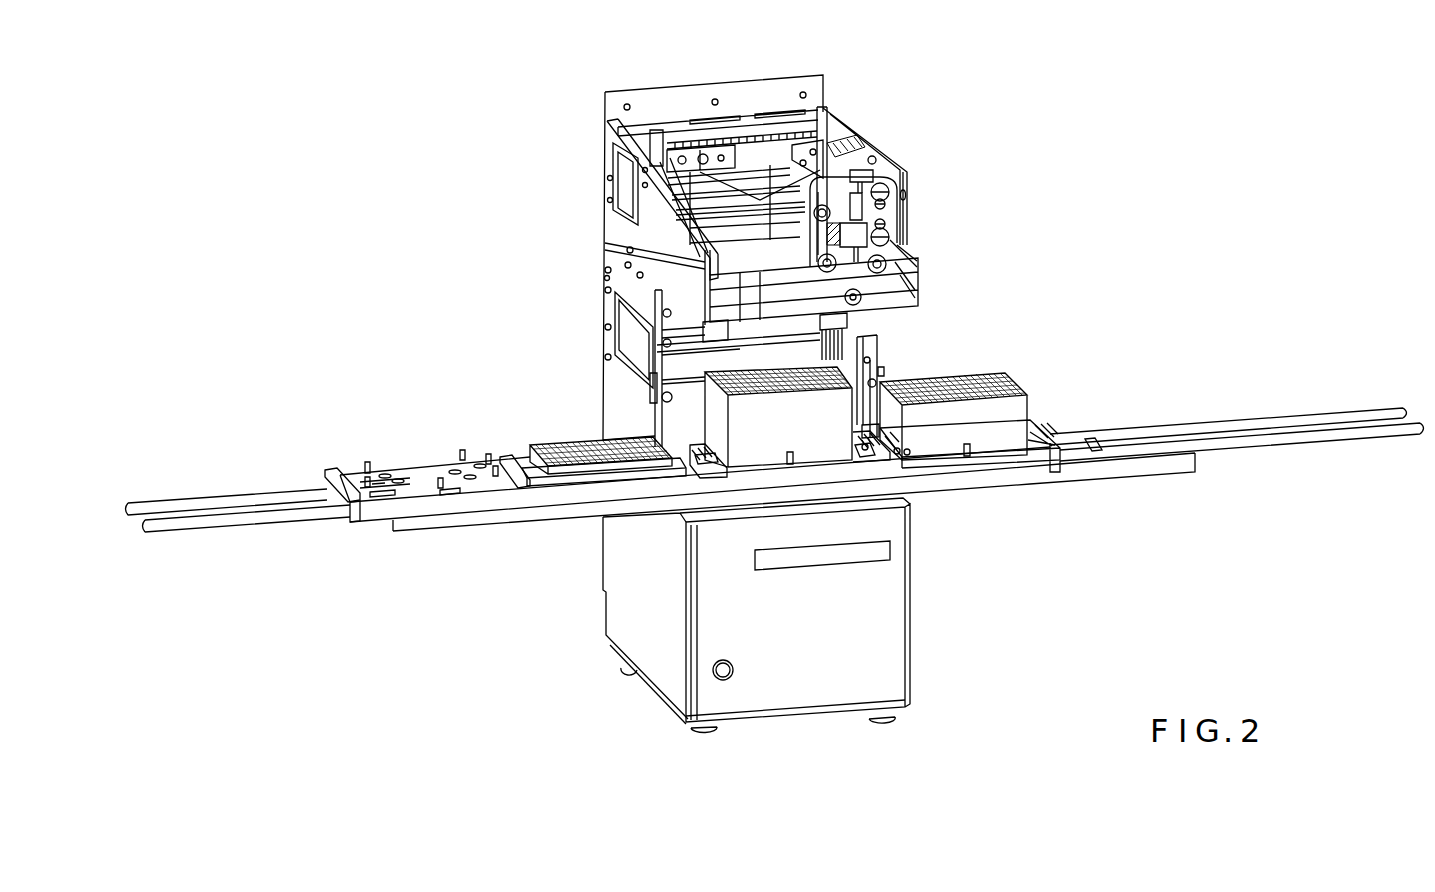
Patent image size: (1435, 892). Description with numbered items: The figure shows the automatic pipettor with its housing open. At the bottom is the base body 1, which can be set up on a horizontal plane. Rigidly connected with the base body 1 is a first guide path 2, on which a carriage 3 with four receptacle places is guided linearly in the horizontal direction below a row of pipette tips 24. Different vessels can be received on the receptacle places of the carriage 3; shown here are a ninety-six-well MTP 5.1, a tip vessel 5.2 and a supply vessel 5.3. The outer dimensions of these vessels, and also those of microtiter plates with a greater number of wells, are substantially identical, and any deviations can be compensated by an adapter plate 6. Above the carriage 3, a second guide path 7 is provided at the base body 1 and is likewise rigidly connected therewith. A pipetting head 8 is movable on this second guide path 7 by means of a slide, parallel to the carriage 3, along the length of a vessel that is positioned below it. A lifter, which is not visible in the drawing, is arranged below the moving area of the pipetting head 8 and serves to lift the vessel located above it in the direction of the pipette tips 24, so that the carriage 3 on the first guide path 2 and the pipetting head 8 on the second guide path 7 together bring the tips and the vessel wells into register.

The base body 1 is at (882, 618).
The first guide path 2 is at (1178, 463).
The carriage 3 is at (380, 510).
The 96-well MTP 5.1 is at (565, 443).
The tip vessel 5.2 is at (830, 447).
The supply vessel 5.3 is at (1007, 417).
The adapter plate 6 is at (998, 453).
The second guide path 7 is at (897, 281).
The pipetting head 8 is at (790, 165).
The pipette tips 24 is at (873, 335).